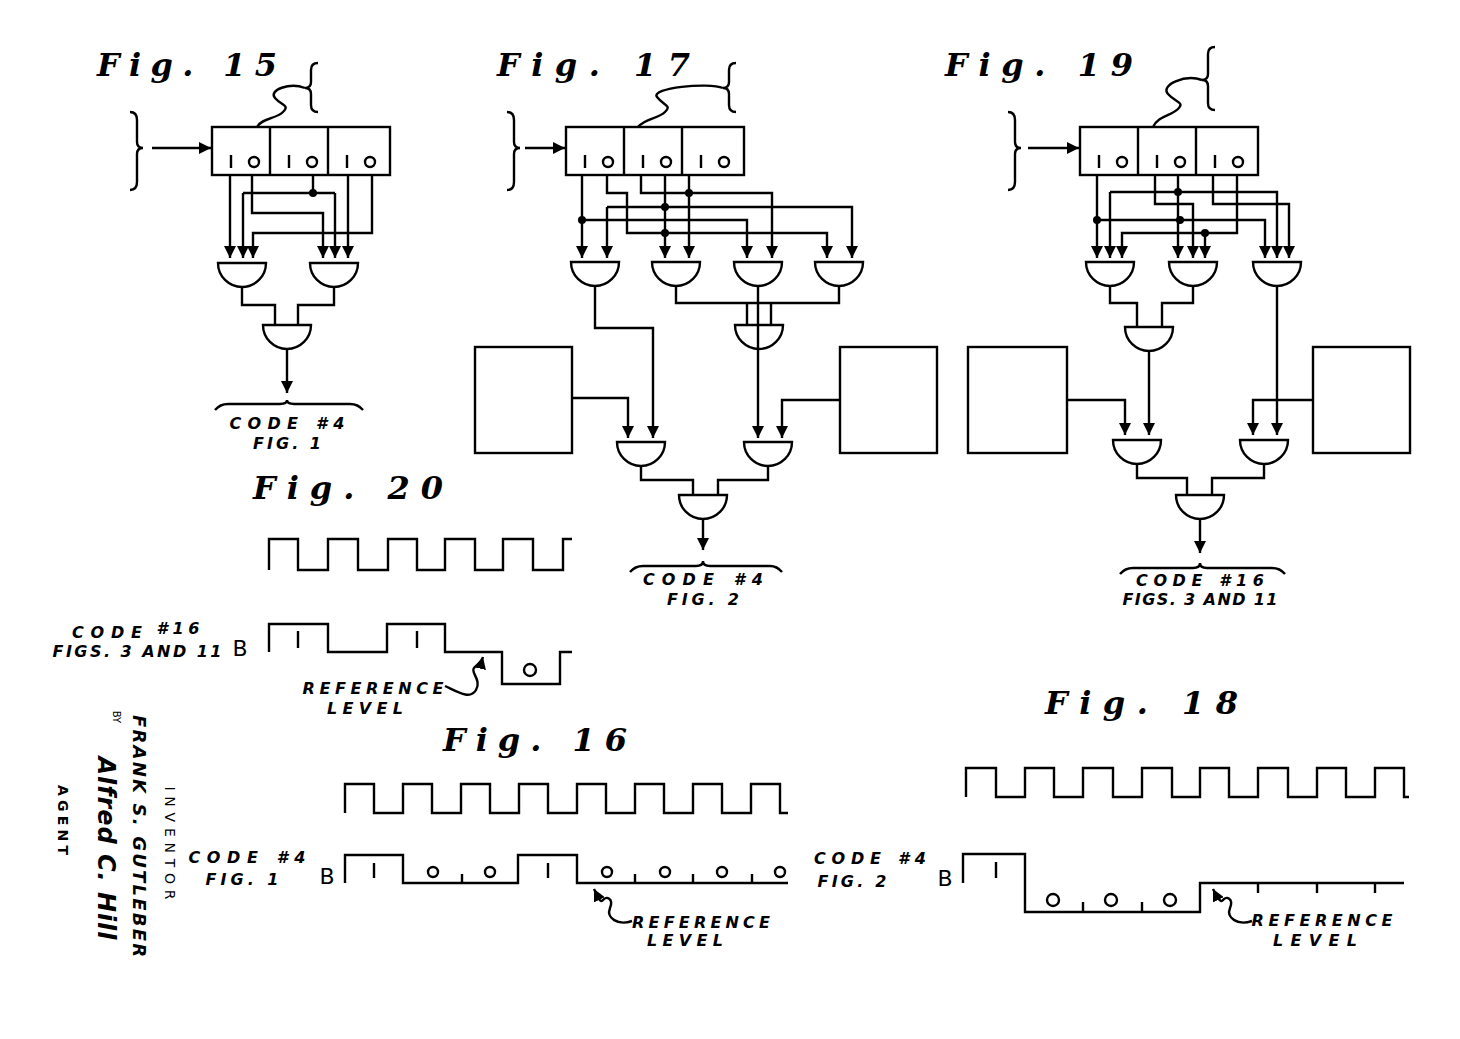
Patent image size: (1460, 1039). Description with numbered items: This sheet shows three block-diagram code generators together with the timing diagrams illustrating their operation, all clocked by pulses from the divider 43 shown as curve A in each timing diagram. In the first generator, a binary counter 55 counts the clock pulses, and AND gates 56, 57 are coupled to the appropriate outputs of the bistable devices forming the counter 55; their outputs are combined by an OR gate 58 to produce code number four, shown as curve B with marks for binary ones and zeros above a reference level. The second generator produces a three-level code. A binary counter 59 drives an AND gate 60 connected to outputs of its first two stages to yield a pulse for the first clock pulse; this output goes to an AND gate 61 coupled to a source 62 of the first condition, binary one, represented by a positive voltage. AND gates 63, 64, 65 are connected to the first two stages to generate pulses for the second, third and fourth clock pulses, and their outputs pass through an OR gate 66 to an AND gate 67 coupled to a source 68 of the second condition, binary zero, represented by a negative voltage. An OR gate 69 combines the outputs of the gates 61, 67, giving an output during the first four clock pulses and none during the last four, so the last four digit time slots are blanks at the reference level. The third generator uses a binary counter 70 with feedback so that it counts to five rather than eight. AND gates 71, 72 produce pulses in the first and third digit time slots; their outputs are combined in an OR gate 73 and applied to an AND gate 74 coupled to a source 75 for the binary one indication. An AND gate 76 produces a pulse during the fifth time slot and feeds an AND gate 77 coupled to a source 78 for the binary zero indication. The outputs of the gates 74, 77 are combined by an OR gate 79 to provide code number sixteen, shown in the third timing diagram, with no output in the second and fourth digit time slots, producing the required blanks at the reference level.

In FIG. 15, the divider 43 is at (128, 151).
In FIG. 17, the divider 43 is at (489, 151).
In FIG. 19, the divider 43 is at (1002, 151).
In FIG. 20, the divider 43 is at (321, 555).
In FIG. 16, the divider 43 is at (482, 798).
In FIG. 18, the divider 43 is at (1107, 782).
In FIG. 15, the binary counter 55 is at (385, 176).
In FIG. 15, the AND gate 56 is at (347, 270).
In FIG. 15, the AND gate 57 is at (221, 276).
In FIG. 15, the OR gate 58 is at (268, 331).
In FIG. 17, the binary counter 59 is at (737, 152).
In FIG. 17, the AND gate 60 is at (579, 275).
In FIG. 17, the AND gate 61 is at (623, 458).
In FIG. 17, the source 62 is at (522, 357).
In FIG. 17, the AND gate 63 is at (664, 280).
In FIG. 17, the AND gate 64 is at (743, 278).
In FIG. 17, the AND gate 65 is at (853, 272).
In FIG. 17, the OR gate 66 is at (780, 335).
In FIG. 17, the AND gate 67 is at (782, 448).
In FIG. 17, the source 68 is at (893, 445).
In FIG. 17, the OR gate 69 is at (723, 508).
In FIG. 19, the binary counter 70 is at (1248, 144).
In FIG. 19, the AND gate 71 is at (1101, 276).
In FIG. 19, the AND gate 72 is at (1208, 272).
In FIG. 19, the OR gate 73 is at (1172, 335).
In FIG. 19, the AND gate 74 is at (1120, 450).
In FIG. 19, the source 75 is at (1023, 447).
In FIG. 19, the AND gate 76 is at (1293, 272).
In FIG. 19, the AND gate 77 is at (1277, 448).
In FIG. 19, the source 78 is at (1370, 355).
In FIG. 19, the OR gate 79 is at (1218, 507).